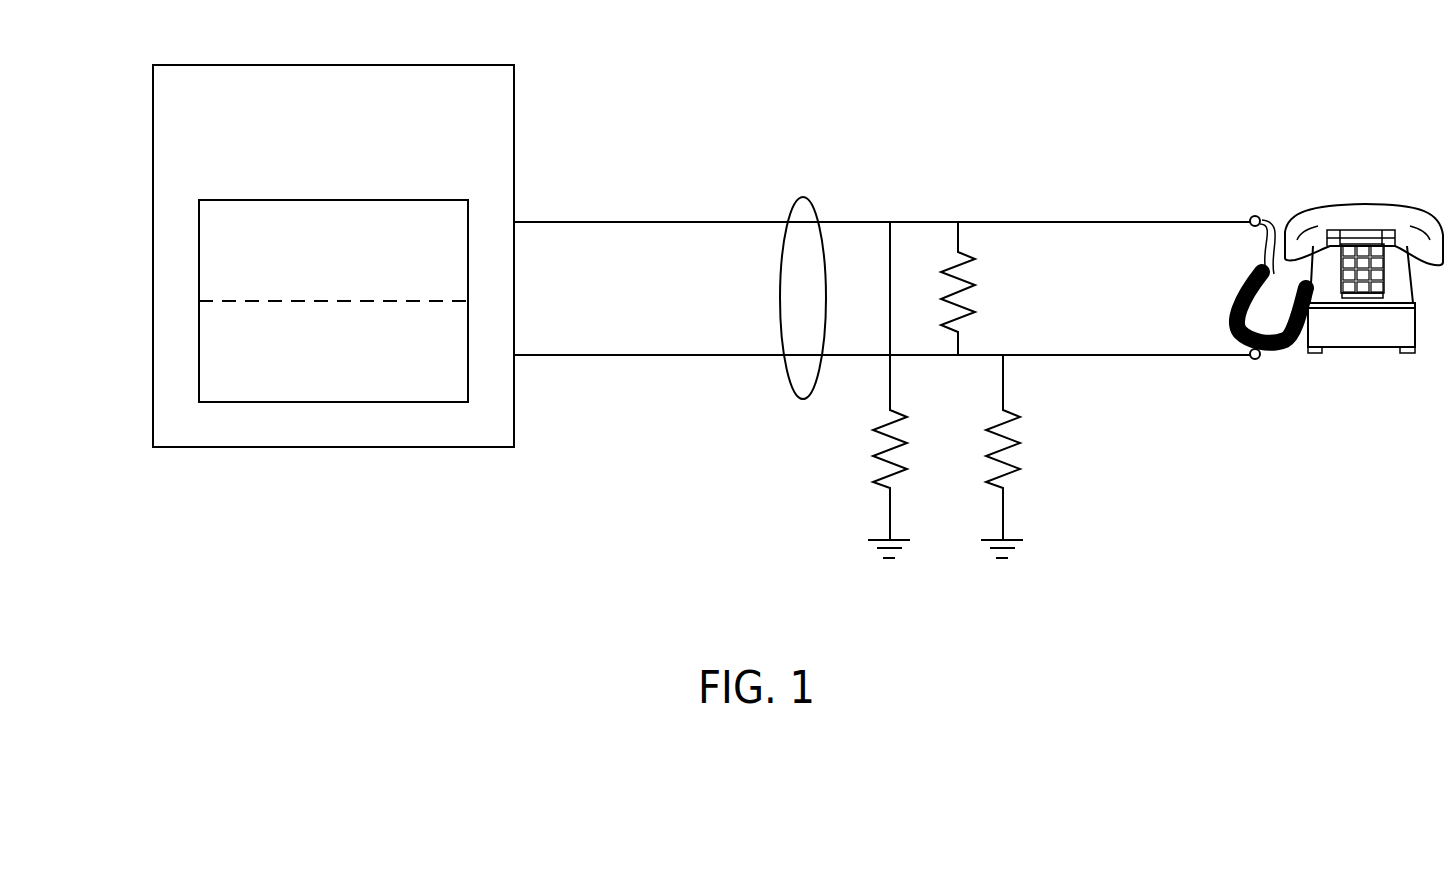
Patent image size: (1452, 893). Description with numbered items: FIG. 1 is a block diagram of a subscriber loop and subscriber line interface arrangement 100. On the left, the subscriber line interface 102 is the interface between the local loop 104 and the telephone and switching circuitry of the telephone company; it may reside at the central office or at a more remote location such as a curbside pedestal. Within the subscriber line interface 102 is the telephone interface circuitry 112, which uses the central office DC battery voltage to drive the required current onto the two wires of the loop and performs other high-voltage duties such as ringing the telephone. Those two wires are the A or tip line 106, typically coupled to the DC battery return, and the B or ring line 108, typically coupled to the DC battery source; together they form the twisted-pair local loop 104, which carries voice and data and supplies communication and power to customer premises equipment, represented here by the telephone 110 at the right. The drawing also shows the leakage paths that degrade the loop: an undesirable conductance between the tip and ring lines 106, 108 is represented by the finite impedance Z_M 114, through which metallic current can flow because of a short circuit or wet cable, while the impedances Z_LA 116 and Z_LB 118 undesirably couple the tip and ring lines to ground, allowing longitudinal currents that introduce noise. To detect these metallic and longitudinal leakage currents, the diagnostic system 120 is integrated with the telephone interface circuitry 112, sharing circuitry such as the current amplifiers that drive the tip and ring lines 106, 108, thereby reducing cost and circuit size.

The subscriber loop and subscriber line interface arrangement 100 is at (1080, 83).
The subscriber line interface 102 is at (458, 64).
The local loop 104 is at (779, 259).
The tip line 106 is at (666, 221).
The ring line 108 is at (675, 357).
The telephone 110 is at (1380, 332).
The telephone interface circuitry 112 is at (421, 206).
The impedance Z_M 114 is at (974, 283).
The impedance Z_LA 116 is at (876, 462).
The impedance Z_LB 118 is at (1012, 468).
The diagnostic system 120 is at (317, 391).